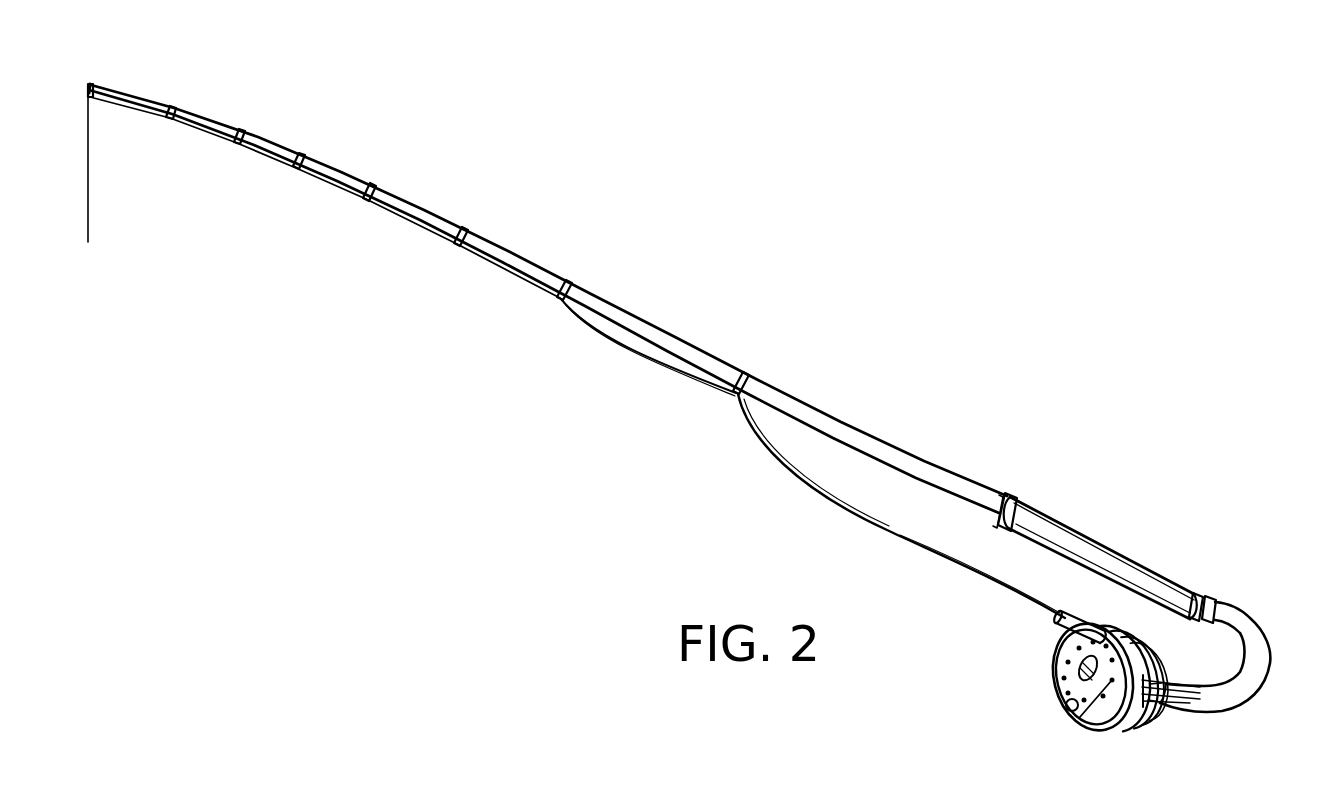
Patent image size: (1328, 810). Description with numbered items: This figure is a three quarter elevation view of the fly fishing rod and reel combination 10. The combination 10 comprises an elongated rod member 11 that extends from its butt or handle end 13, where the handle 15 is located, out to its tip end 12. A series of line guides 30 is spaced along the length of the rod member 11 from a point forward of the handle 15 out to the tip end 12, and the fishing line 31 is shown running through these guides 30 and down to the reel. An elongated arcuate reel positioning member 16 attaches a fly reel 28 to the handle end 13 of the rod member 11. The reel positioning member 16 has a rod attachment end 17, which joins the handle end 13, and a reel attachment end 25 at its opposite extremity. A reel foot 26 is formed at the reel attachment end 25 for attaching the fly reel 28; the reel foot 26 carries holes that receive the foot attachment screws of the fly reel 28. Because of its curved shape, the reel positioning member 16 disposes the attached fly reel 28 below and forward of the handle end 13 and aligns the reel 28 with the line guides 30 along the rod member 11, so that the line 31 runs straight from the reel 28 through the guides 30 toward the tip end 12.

The fly fishing rod and reel combination 10 is at (777, 249).
The rod member 11 is at (530, 263).
The tip end 12 is at (91, 83).
The handle end 13 is at (1210, 592).
The handle 15 is at (1146, 558).
The reel positioning member 16 is at (1269, 642).
The rod attachment end 17 is at (1236, 603).
The reel attachment end 25 is at (1162, 712).
The reel foot 26 is at (1152, 680).
The fly reel 28 is at (1057, 677).
The line guides 30 is at (237, 143).
The fishing line 31 is at (827, 497).